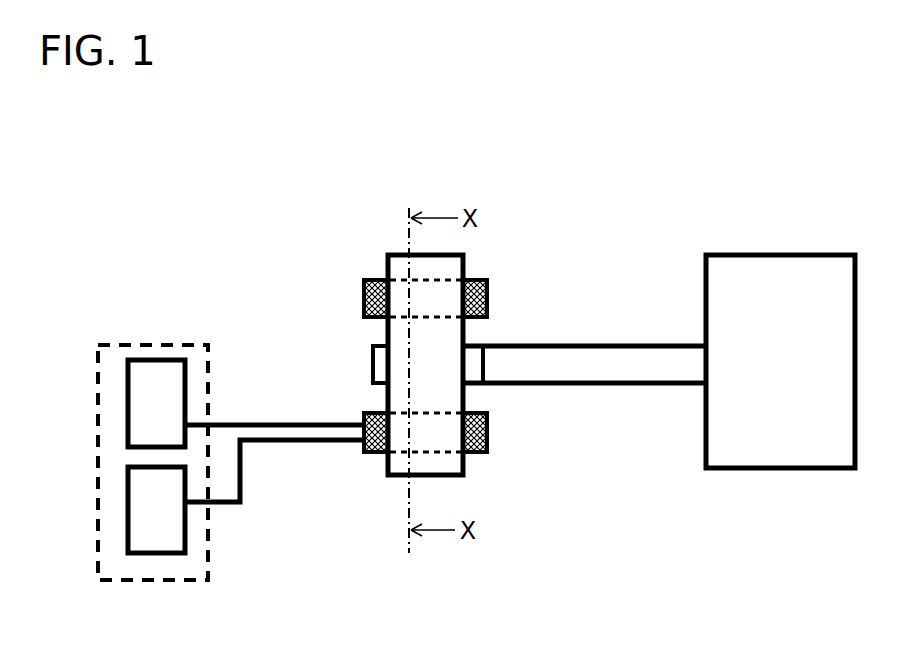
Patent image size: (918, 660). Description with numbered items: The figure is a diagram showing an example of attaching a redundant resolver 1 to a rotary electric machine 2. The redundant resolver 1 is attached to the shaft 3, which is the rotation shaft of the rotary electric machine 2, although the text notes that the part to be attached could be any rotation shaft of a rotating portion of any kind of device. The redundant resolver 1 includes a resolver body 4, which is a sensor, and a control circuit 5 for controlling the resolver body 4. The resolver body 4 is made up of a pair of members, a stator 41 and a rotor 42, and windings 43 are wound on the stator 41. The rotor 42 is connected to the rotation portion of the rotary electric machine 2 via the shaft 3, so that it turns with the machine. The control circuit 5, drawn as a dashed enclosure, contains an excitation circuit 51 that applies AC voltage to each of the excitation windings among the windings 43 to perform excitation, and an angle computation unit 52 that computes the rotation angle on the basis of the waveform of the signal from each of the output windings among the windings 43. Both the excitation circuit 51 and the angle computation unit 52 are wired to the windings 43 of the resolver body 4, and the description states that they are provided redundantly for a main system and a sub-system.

The redundant resolver 1 is at (490, 197).
The rotary electric machine 2 is at (763, 470).
The shaft 3 is at (588, 386).
The resolver body 4 is at (417, 378).
The stator 41 is at (465, 260).
The rotor 42 is at (372, 357).
The windings 43 is at (489, 293).
The control circuit 5 is at (195, 459).
The excitation circuit 51 is at (145, 358).
The angle computation unit 52 is at (184, 542).